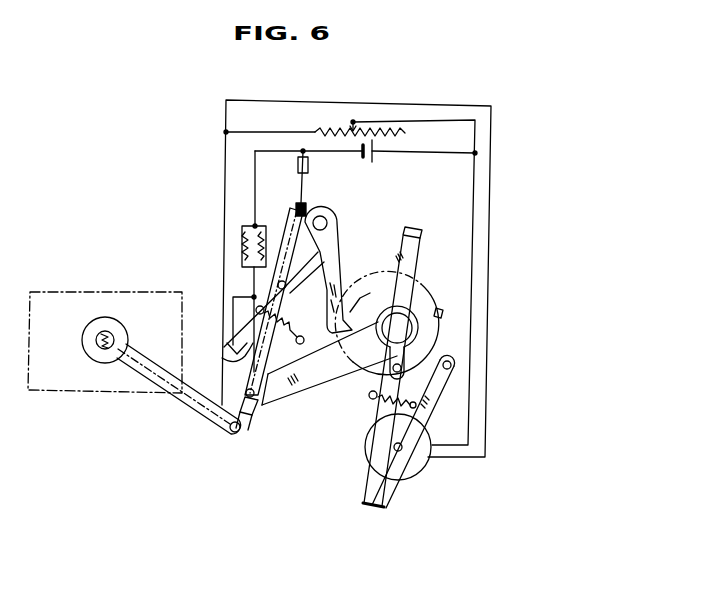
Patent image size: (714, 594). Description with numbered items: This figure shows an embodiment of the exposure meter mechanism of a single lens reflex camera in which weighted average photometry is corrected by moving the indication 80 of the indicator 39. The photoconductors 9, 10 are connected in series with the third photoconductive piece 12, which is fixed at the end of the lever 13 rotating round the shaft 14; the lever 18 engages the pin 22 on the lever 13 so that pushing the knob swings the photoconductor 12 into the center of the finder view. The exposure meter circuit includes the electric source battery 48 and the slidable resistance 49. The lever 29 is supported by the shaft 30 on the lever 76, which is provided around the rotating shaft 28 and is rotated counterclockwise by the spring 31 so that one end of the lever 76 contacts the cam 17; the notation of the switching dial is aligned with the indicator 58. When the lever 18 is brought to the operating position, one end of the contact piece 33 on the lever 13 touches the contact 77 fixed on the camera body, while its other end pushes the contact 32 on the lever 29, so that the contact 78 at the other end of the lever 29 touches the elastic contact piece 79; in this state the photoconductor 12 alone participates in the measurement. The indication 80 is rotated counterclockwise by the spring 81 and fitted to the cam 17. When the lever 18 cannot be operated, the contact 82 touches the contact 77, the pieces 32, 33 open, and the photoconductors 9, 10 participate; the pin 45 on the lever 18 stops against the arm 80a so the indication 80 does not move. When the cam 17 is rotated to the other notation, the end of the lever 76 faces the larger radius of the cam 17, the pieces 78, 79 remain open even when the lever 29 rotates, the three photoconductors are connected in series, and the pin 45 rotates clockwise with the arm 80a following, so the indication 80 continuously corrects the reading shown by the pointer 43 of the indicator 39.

The slidable resistance 49 is at (345, 128).
The electric source battery 48 is at (377, 160).
The contact 78 is at (298, 198).
The elastic contact piece 79 is at (304, 188).
The lever 29 is at (285, 215).
The photoconductor 9 is at (263, 232).
The photoconductor 10 is at (244, 232).
The rotating shaft 28 is at (322, 216).
The lever 76 is at (343, 248).
The indicator 58 is at (441, 307).
The shaft 30 is at (286, 287).
The spring 31 is at (292, 328).
The contact 82 is at (233, 347).
The contact 32 is at (303, 355).
The pin 45 is at (393, 364).
The contact 77 is at (250, 362).
The contact piece 33 is at (302, 373).
The cam 17 is at (370, 370).
The third photoconductive piece 12 is at (107, 352).
The lever 13 is at (148, 387).
The lever 18 is at (310, 388).
The spring 81 is at (382, 402).
The arm 80a is at (447, 390).
The pin 22 is at (262, 410).
The shaft 14 is at (233, 437).
The indicator 39 is at (366, 452).
The indication 80 is at (370, 490).
The pointer 43 is at (370, 510).